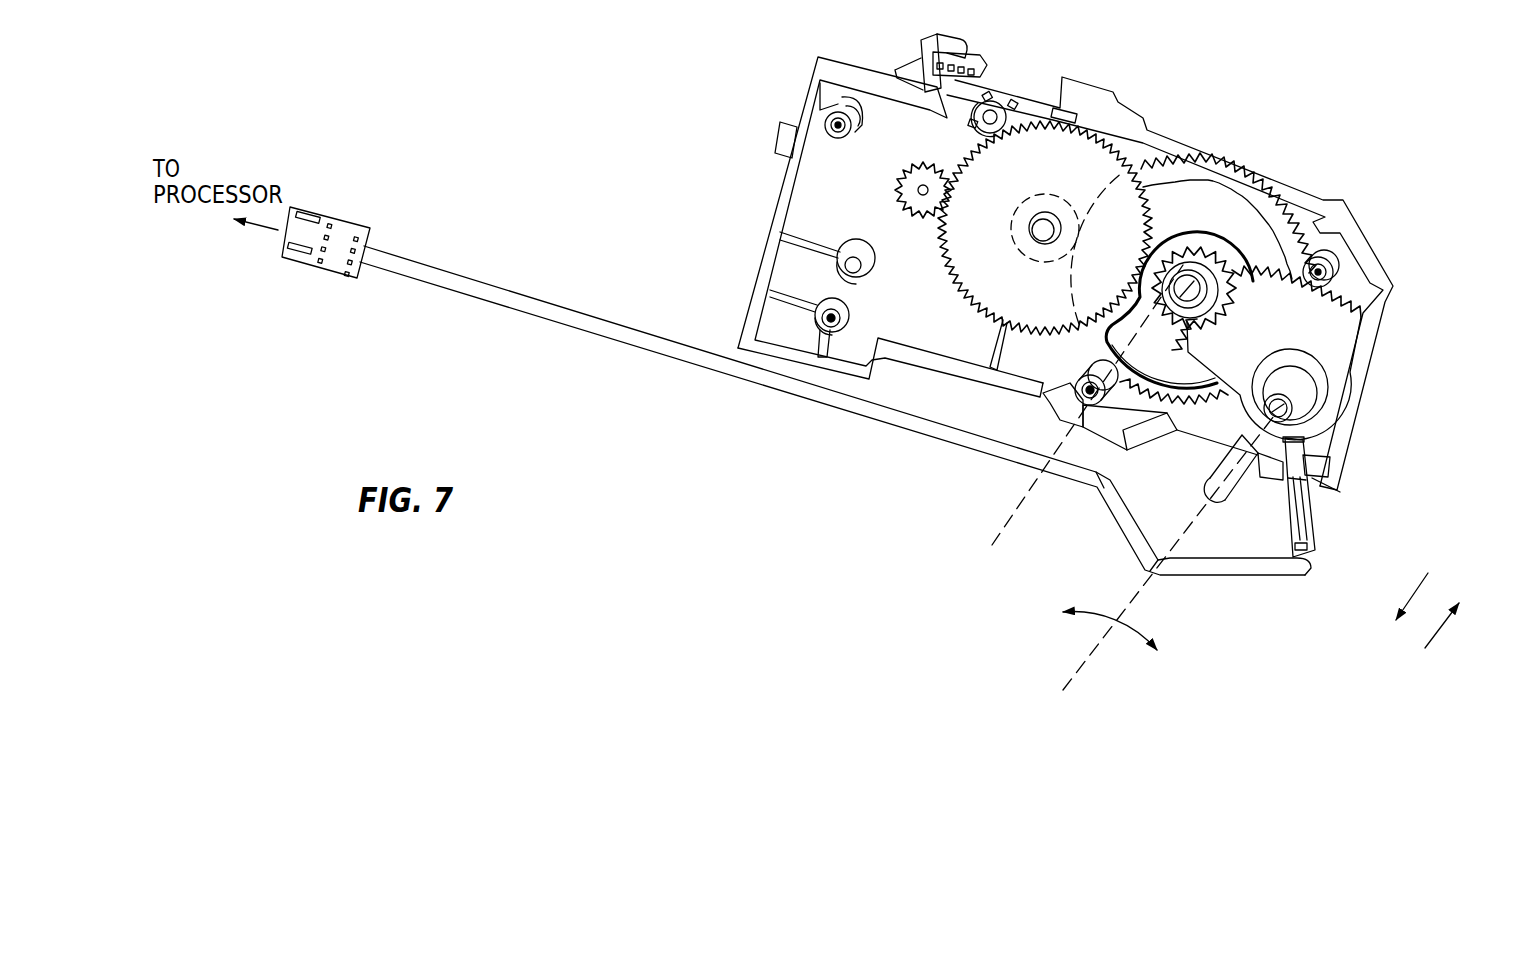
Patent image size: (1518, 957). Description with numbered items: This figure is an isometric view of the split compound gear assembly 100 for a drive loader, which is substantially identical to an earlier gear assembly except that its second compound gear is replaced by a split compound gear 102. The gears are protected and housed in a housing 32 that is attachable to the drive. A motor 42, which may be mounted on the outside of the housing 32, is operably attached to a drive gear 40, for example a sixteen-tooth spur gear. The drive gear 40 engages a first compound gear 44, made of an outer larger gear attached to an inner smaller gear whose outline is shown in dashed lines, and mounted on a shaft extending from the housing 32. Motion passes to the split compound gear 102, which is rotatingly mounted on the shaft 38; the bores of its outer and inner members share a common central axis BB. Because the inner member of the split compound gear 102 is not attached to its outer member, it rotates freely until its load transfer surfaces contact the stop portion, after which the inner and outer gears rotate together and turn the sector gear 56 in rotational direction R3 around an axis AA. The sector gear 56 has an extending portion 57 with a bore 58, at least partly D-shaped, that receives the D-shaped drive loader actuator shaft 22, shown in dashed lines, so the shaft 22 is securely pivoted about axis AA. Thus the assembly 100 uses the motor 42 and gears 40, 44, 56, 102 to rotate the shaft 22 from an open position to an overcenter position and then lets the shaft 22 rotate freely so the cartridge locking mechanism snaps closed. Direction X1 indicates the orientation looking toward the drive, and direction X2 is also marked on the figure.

The split compound gear assembly 100 is at (700, 70).
The housing 32 is at (848, 62).
The motor 42 is at (980, 76).
The drive gear 40 is at (897, 182).
The first compound gear 44 is at (964, 296).
The split compound gear 102 is at (1235, 157).
The shaft 38 is at (1192, 290).
The sector gear 56 is at (1368, 330).
The extending portion 57 is at (1303, 388).
The bore 58 is at (1283, 410).
The actuator shaft 22 is at (1232, 460).
The axis AA is at (1072, 672).
The axis BB is at (1003, 525).
The rotational direction R3 is at (1105, 606).
The direction X1 is at (1422, 582).
The direction X2 is at (1433, 643).